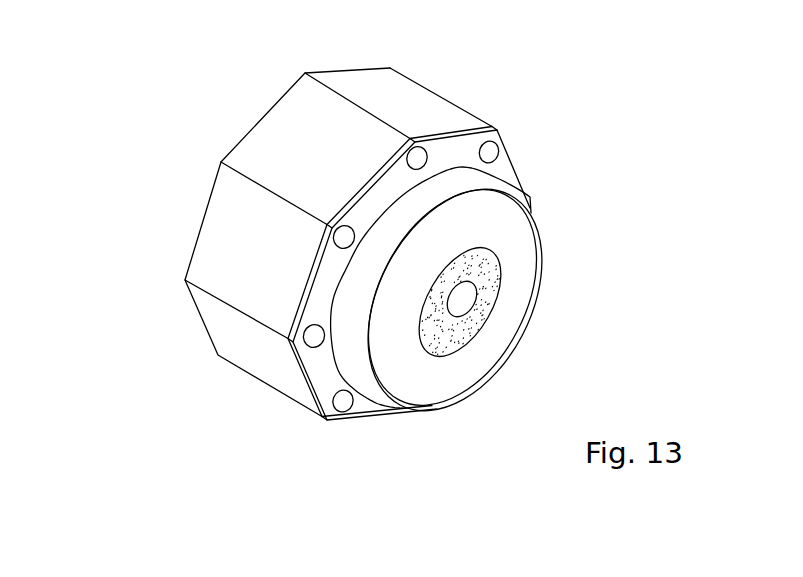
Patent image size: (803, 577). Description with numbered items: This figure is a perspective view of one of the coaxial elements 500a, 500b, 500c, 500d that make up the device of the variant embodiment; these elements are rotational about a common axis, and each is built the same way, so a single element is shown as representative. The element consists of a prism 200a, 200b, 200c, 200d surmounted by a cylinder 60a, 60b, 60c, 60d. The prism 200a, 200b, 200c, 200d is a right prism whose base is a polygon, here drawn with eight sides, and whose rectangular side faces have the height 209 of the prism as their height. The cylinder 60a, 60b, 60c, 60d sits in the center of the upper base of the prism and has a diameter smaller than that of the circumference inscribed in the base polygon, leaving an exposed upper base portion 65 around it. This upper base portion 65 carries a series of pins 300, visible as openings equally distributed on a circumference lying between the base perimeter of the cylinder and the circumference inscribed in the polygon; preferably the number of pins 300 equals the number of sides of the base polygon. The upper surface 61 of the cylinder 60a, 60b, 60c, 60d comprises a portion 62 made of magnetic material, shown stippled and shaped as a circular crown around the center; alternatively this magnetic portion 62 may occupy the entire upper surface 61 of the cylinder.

The cylinder 60a is at (302, 263).
The cylinder 60b is at (302, 263).
The cylinder 60c is at (302, 263).
The cylinder 60d is at (402, 225).
The upper surface 61 is at (525, 238).
The magnetic portion 62 is at (490, 287).
The upper base portion 65 is at (327, 282).
The prism 200a is at (260, 276).
The prism 200b is at (260, 276).
The prism 200c is at (260, 276).
The prism 200d is at (227, 367).
The height 209 is at (432, 93).
The pins 300 is at (347, 400).
The coaxial element 500a is at (399, 276).
The coaxial element 500b is at (399, 276).
The coaxial element 500c is at (399, 276).
The coaxial element 500d is at (640, 55).